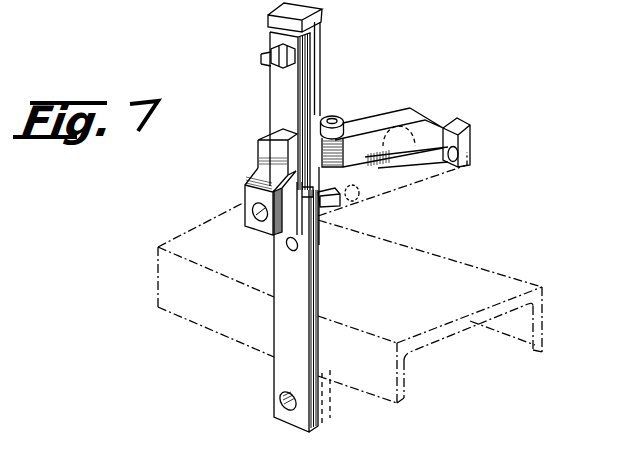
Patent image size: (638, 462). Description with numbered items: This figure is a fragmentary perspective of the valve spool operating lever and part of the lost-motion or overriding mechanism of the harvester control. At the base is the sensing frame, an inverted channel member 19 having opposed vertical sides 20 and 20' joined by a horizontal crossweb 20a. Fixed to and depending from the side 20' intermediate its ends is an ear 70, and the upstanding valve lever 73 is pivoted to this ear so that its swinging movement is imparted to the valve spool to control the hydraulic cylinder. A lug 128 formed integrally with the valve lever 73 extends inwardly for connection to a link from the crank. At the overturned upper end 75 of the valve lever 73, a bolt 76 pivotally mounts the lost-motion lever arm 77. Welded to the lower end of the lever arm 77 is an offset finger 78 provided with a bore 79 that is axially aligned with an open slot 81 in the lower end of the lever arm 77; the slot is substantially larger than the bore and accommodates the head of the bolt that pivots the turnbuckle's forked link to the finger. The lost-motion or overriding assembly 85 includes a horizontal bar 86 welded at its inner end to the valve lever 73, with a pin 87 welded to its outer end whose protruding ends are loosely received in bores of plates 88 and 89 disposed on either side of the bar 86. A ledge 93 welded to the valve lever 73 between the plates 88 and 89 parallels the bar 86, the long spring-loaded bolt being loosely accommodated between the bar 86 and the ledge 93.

The overturned upper end 75 is at (269, 14).
The bolt 76 is at (262, 60).
The valve lever 73 is at (283, 362).
The lost-motion lever arm 77 is at (272, 103).
The lug 128 is at (329, 116).
The plate 88 is at (374, 120).
The lost-motion or overriding assembly 85 is at (427, 110).
The horizontal bar 86 is at (433, 127).
The pin 87 is at (460, 156).
The offset finger 78 is at (246, 187).
The bore 79 is at (257, 220).
The plate 89 is at (394, 193).
The ledge 93 is at (330, 206).
The open slot 81 is at (292, 232).
The inverted channel member 19 is at (433, 247).
The vertical side 20 is at (552, 319).
The horizontal crossweb 20a is at (455, 333).
The vertical side 20' is at (423, 379).
The ear 70 is at (331, 411).